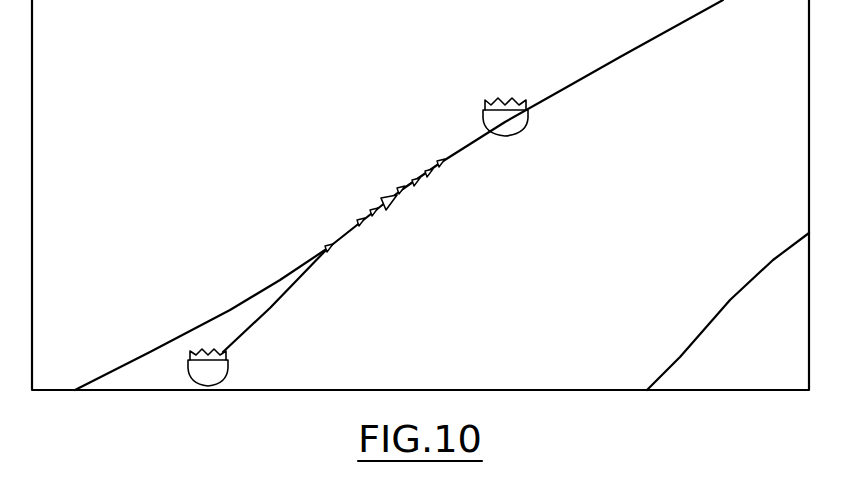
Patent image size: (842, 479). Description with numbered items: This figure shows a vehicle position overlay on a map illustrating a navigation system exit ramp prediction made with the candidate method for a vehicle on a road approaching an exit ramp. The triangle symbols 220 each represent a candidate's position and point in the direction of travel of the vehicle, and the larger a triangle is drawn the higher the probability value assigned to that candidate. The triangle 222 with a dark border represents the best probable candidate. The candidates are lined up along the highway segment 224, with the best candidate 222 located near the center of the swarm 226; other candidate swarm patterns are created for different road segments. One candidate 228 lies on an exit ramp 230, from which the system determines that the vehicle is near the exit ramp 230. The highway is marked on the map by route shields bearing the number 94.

The vehicle position markers 220 is at (400, 196).
The highlighted vehicle marker 222 is at (390, 210).
The highway segment 224 is at (468, 147).
The road junction 226 is at (364, 240).
The road segment to interchange 228 is at (330, 245).
The road segment 230 is at (218, 310).
The interstate highway shield 94 is at (358, 242).